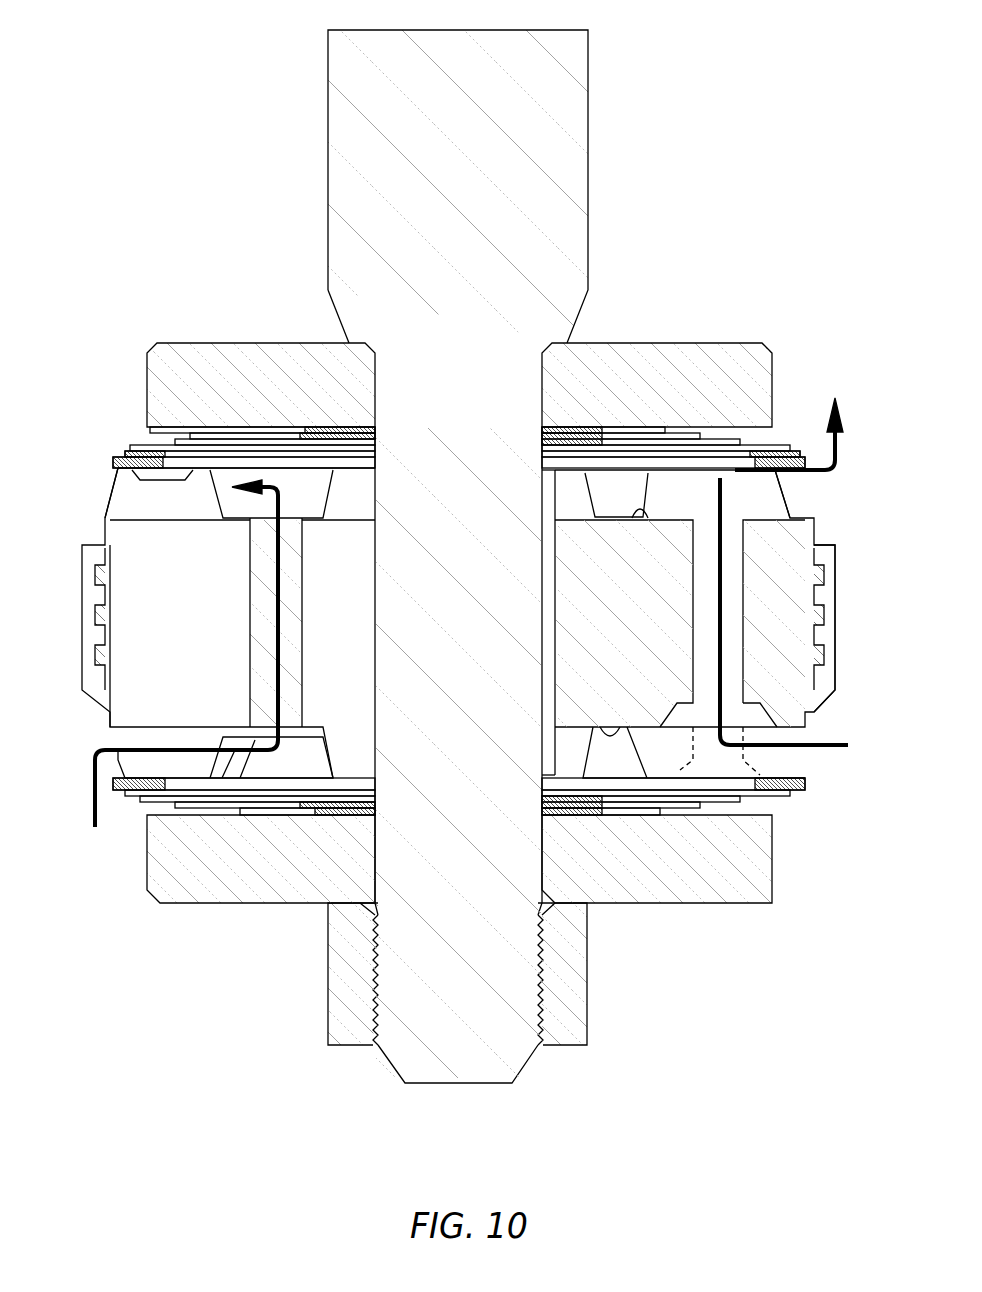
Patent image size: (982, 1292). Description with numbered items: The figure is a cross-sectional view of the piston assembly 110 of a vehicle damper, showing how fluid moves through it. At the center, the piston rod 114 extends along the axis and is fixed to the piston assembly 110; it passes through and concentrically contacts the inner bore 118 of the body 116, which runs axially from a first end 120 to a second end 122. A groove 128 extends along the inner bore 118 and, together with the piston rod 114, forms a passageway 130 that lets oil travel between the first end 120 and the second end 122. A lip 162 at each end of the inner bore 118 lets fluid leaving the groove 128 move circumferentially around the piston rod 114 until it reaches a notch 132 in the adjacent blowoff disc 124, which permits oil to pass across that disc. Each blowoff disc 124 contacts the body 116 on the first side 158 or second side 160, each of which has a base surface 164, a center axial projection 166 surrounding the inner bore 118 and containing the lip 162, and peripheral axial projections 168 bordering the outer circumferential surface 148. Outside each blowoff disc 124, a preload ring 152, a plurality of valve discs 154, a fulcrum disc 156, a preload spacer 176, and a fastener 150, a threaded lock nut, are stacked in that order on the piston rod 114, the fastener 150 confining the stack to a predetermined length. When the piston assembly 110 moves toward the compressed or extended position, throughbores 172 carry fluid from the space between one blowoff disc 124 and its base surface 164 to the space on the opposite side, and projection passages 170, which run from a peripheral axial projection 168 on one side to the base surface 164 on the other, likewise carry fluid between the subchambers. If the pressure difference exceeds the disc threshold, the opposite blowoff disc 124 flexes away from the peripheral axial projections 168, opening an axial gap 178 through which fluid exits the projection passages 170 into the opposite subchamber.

The piston assembly 110 is at (185, 50).
The piston rod 114 is at (592, 100).
The body 116 is at (138, 530).
The inner bore 118 is at (385, 598).
The first end 120 is at (545, 478).
The second end 122 is at (542, 778).
The blowoff disc 124 is at (113, 463).
The groove 128 is at (545, 605).
The passageway 130 is at (550, 683).
The notch 132 is at (605, 455).
The outer circumferential surface 148 is at (835, 615).
The fastener 150 is at (588, 985).
The preload ring 152 is at (120, 452).
The valve discs 154 is at (320, 432).
The fulcrum disc 156 is at (322, 436).
The first side 158 is at (640, 518).
The second side 160 is at (608, 740).
The lip 162 is at (377, 472).
The base surface 164 is at (330, 520).
The center axial projection 166 is at (328, 495).
The peripheral axial projections 168 is at (112, 492).
The projection passage 170 is at (735, 583).
The throughbore 172 is at (275, 612).
The preload spacer 176 is at (648, 343).
The axial gap 178 is at (848, 462).